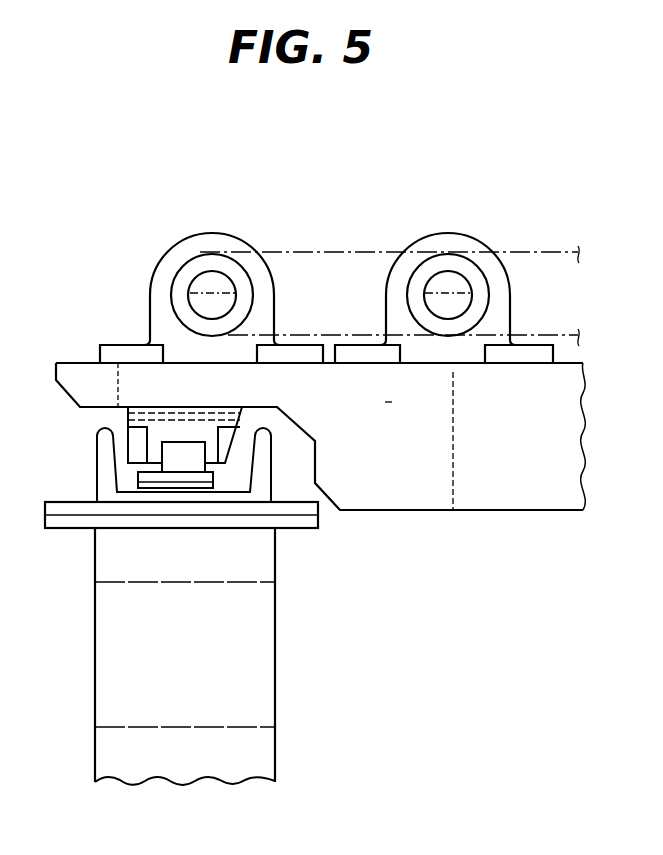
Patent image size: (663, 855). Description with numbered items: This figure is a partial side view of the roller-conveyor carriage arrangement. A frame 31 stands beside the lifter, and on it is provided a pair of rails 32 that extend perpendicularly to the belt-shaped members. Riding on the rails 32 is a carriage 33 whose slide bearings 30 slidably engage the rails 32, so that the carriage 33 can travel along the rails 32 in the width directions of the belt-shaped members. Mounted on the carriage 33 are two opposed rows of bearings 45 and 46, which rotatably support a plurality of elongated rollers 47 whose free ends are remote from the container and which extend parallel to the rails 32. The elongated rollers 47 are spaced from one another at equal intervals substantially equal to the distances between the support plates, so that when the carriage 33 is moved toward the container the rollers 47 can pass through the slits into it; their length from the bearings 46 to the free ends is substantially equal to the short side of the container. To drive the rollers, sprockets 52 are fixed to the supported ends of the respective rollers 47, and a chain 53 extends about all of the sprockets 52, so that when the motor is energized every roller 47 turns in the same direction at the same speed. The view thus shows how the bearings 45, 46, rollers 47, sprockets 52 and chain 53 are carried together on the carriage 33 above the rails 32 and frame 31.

The slide bearing 30 is at (188, 425).
The frame 31 is at (257, 658).
The rail 32 is at (185, 468).
The carriage 33 is at (505, 495).
The bearing 45 is at (205, 237).
The bearing 46 is at (453, 234).
The elongated roller 47 is at (235, 289).
The sprocket 52 is at (173, 291).
The chain 53 is at (322, 252).